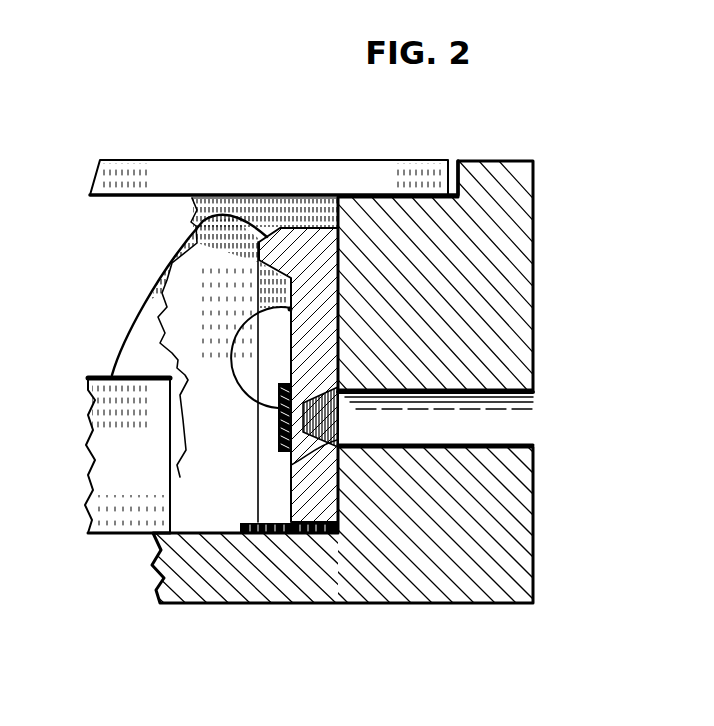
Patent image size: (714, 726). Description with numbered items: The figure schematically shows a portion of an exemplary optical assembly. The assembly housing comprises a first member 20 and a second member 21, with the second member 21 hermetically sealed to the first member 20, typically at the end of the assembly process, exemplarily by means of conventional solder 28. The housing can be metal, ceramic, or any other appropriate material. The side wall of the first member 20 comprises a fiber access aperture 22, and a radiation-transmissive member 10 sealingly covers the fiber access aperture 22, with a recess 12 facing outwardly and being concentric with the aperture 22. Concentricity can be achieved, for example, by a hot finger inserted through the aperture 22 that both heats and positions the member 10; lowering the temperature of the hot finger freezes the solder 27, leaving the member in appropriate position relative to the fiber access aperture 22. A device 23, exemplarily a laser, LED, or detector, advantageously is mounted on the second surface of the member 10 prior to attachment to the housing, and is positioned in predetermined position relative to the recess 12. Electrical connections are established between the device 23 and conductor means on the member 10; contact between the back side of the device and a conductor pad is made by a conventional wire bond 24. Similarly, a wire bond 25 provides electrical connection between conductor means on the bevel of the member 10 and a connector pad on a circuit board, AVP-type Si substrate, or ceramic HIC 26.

The radiation-transmissive member 10 is at (293, 506).
The recess 12 is at (291, 462).
The first member 20 is at (508, 269).
The second member 21 is at (137, 182).
The fiber access aperture 22 is at (513, 437).
The device 23 is at (278, 440).
The wire bond 24 is at (236, 366).
The wire bond 25 is at (150, 279).
The ceramic HIC 26 is at (130, 455).
The solder 27 is at (332, 223).
The solder 28 is at (388, 192).